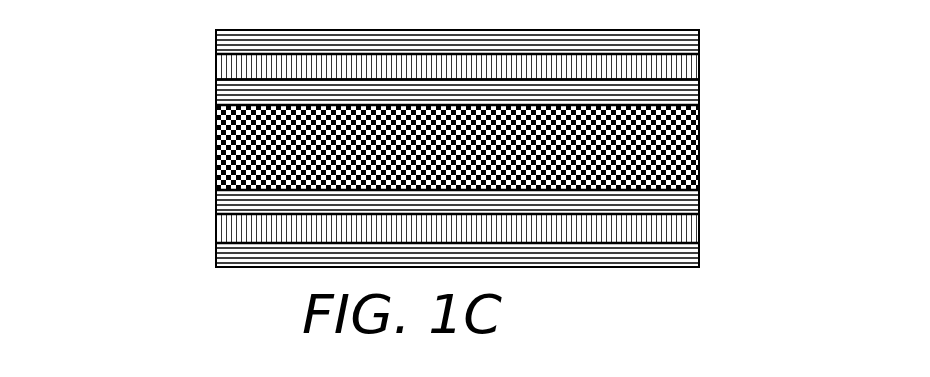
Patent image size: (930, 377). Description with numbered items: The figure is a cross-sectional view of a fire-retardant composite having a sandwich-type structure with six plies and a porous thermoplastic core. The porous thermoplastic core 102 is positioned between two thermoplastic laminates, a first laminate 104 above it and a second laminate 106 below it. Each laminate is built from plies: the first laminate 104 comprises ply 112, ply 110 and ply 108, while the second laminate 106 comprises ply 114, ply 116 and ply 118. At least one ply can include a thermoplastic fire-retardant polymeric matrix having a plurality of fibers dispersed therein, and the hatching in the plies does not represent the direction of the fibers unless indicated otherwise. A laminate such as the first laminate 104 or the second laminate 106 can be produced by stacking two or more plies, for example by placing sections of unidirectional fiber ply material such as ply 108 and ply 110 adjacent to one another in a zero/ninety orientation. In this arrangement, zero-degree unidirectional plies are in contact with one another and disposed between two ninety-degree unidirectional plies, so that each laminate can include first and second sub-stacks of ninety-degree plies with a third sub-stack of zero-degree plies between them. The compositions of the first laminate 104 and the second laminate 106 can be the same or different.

The porous thermoplastic core 102 is at (237, 178).
The first laminate 104 is at (422, 73).
The second laminate 106 is at (430, 247).
The ply 108 is at (237, 93).
The ply 110 is at (227, 67).
The ply 112 is at (228, 35).
The ply 114 is at (215, 210).
The ply 116 is at (229, 225).
The ply 118 is at (217, 263).